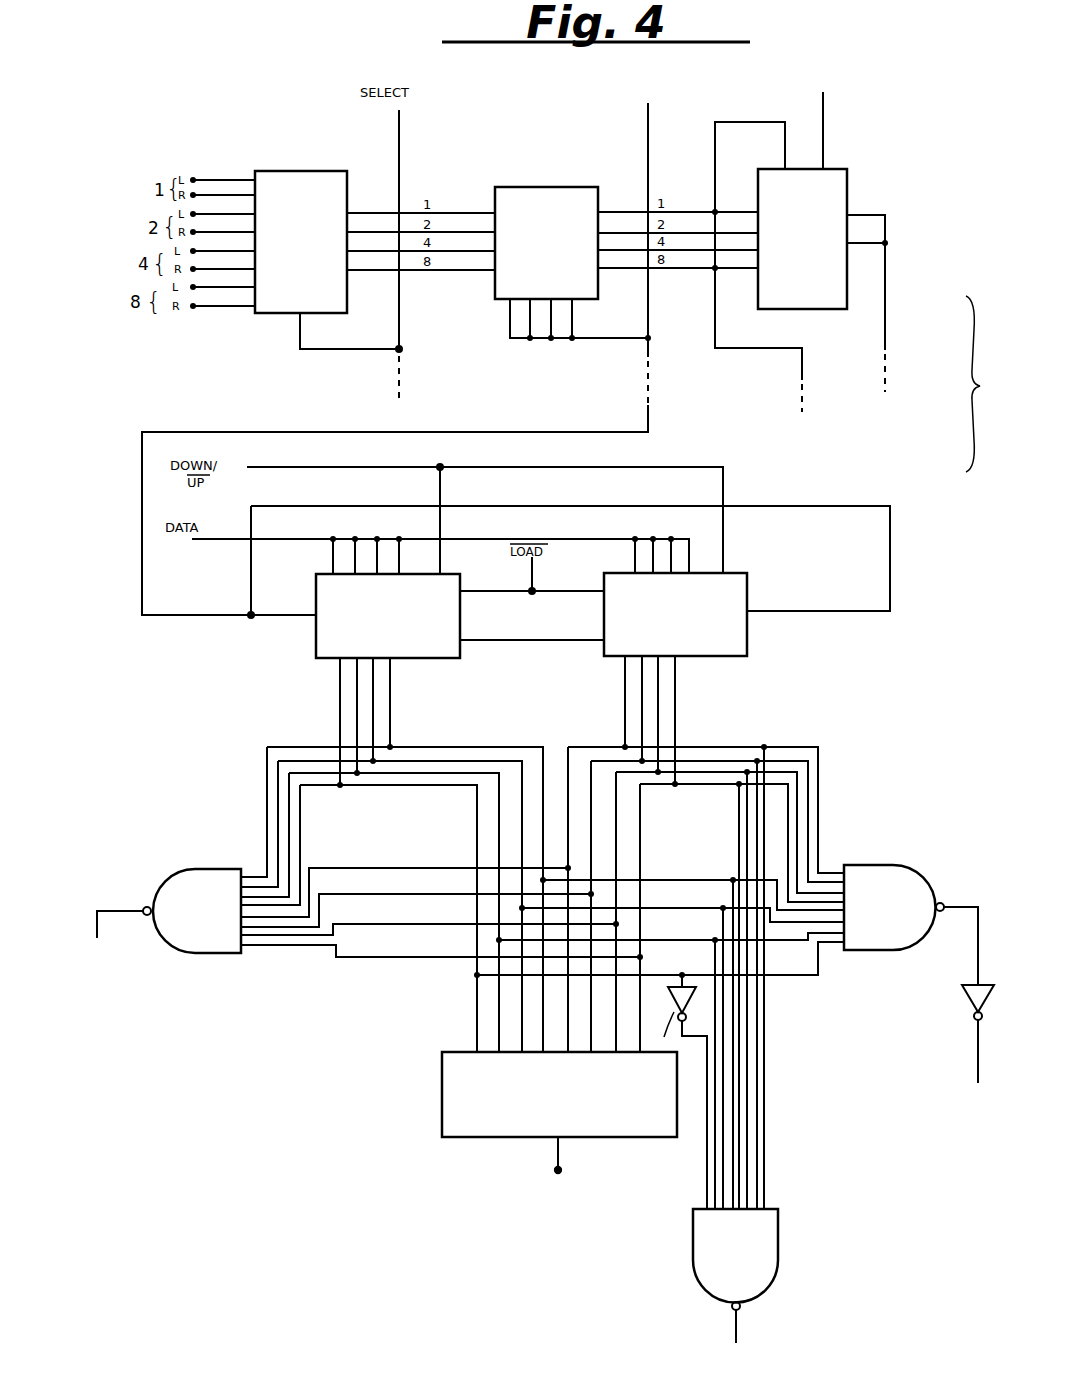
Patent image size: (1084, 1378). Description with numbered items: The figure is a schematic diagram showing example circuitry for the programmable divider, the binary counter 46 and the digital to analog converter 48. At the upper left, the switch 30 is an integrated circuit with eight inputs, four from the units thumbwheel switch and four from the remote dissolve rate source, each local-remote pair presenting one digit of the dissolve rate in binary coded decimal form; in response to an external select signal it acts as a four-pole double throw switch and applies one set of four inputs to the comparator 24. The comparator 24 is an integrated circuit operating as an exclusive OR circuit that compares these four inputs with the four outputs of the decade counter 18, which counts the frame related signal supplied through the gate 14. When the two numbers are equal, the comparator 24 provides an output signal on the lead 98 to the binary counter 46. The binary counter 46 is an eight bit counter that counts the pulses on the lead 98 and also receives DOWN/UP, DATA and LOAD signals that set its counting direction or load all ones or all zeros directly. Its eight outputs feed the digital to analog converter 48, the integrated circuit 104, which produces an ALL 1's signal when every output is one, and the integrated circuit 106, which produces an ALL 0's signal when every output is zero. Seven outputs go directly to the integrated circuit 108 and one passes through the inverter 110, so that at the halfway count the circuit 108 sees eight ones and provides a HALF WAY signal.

The switch 30 is at (299, 173).
The comparator 24 is at (539, 189).
The decade counter 18 is at (847, 177).
The gate 14 is at (862, 84).
The lead 98 is at (650, 350).
The binary counter 46 is at (445, 658).
The integrated circuit 106 is at (192, 872).
The integrated circuit 104 is at (890, 870).
The inverter 110 is at (694, 986).
The digital to analog converter 48 is at (590, 1138).
The integrated circuit 108 is at (693, 1250).